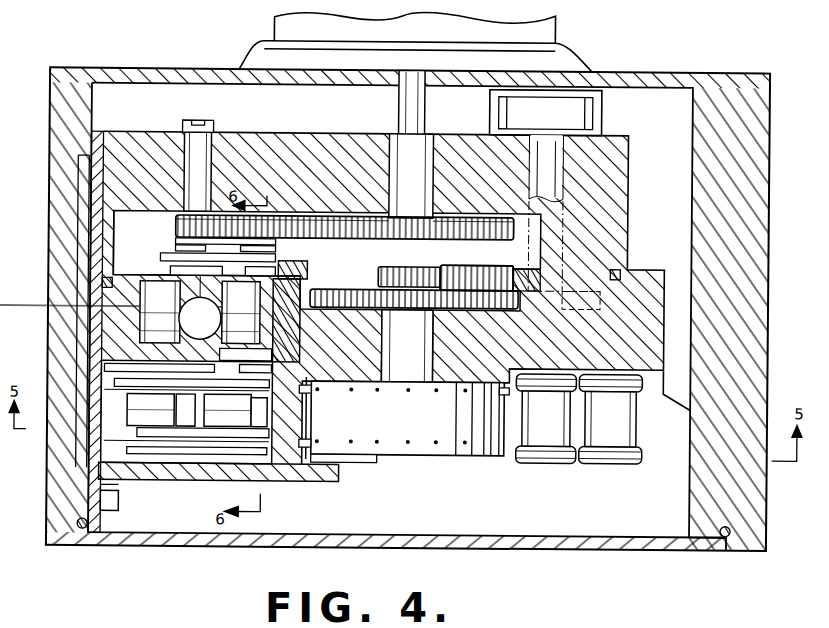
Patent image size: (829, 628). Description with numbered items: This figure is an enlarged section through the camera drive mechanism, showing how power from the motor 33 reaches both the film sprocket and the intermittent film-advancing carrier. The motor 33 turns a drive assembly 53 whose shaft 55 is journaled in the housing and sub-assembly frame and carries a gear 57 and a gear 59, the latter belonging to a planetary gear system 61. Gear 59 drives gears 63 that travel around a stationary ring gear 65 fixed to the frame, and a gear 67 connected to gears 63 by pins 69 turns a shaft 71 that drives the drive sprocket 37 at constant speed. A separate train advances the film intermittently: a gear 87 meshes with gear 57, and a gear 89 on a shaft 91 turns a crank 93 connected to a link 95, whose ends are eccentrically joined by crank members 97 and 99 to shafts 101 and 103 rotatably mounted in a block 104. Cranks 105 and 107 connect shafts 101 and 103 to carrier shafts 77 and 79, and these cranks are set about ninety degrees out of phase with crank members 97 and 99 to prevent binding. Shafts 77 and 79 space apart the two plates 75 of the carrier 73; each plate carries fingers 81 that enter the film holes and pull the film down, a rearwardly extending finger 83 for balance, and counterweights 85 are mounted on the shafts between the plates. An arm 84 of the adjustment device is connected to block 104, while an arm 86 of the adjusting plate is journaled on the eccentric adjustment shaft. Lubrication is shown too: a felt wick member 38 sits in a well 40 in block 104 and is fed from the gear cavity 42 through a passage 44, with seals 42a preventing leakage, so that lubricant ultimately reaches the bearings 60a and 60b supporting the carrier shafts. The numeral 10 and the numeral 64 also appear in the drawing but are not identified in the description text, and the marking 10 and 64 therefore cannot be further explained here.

The motor 33 is at (556, 29).
The drive assembly 53 is at (392, 105).
The shaft 55 is at (423, 113).
The shaft 91 is at (215, 133).
The gear 57 is at (348, 240).
The gear 89 is at (180, 232).
The planetary gear system 61 is at (354, 274).
The gear 59 is at (380, 274).
The pins 69 is at (467, 296).
The gears 63 is at (481, 266).
The gear 67 is at (414, 300).
The shaft 71 is at (399, 356).
The stationary ring gear 65 is at (306, 262).
The block 104 is at (270, 352).
The crank 93 is at (200, 248).
The link 95 is at (158, 257).
The gear 87 is at (282, 240).
The gear cavity 42 is at (146, 219).
The seals 42a is at (102, 291).
The crank member 97 is at (150, 270).
The passage 44 is at (160, 316).
The shaft 101 is at (150, 344).
The felt wick member 38 is at (191, 336).
The well 40 is at (203, 290).
The crank member 99 is at (232, 270).
The shaft 103 is at (230, 326).
The rod 10 is at (232, 376).
The crank 107 is at (262, 371).
The bearing 60a is at (192, 370).
The crank 105 is at (150, 408).
The shaft 77 is at (150, 416).
The arm 84 is at (185, 410).
The spring 64 is at (227, 400).
The plates 75 is at (256, 413).
The carrier 73 is at (262, 437).
The bearing 60b is at (160, 456).
The fingers 81 is at (118, 483).
The arm 86 is at (195, 480).
The drive sprocket 37 is at (478, 457).
The rearwardly extending finger 83 is at (309, 392).
The counterweights 85 is at (310, 420).
The shaft 79 is at (309, 444).